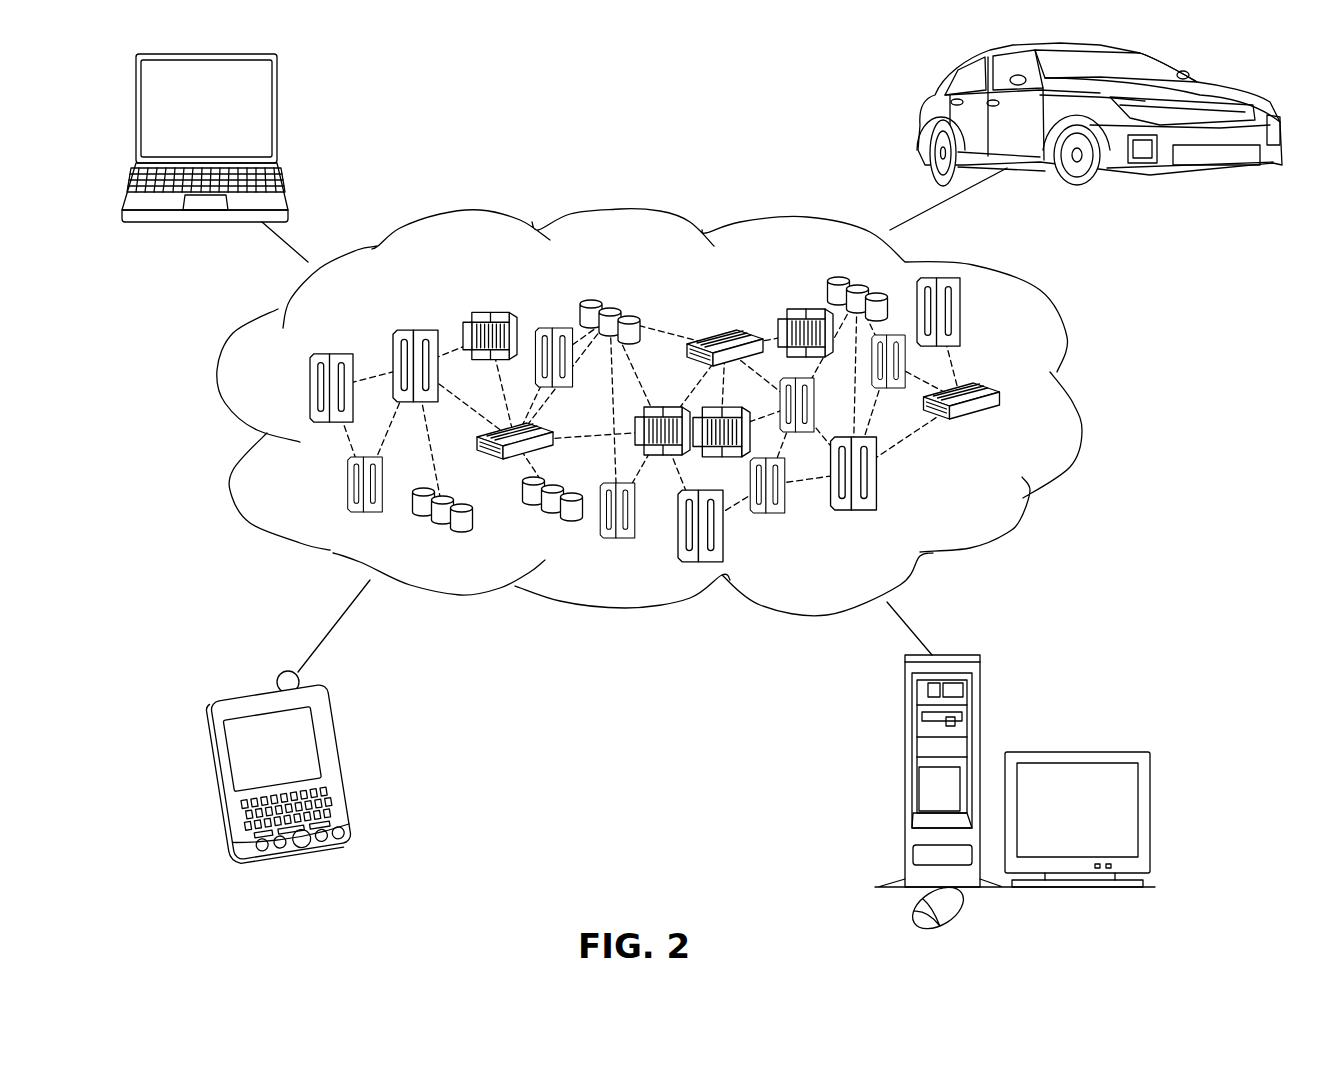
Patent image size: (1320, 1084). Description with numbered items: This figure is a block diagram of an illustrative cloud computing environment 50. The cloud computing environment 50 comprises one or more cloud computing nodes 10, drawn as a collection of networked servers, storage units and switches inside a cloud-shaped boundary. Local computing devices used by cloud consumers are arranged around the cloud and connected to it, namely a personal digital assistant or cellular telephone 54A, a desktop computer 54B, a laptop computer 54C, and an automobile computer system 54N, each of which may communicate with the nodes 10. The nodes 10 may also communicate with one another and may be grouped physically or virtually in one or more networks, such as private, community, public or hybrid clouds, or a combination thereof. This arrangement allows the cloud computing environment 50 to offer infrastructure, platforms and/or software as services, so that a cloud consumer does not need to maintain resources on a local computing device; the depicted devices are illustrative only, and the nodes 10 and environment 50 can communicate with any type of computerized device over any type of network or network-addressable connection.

The cloud computing node 10 is at (978, 500).
The cloud computing environment 50 is at (1075, 402).
The personal digital assistant (PDA) or cellular telephone 54A is at (330, 730).
The desktop computer 54B is at (905, 716).
The laptop computer 54C is at (277, 90).
The automobile computer system 54N is at (918, 111).